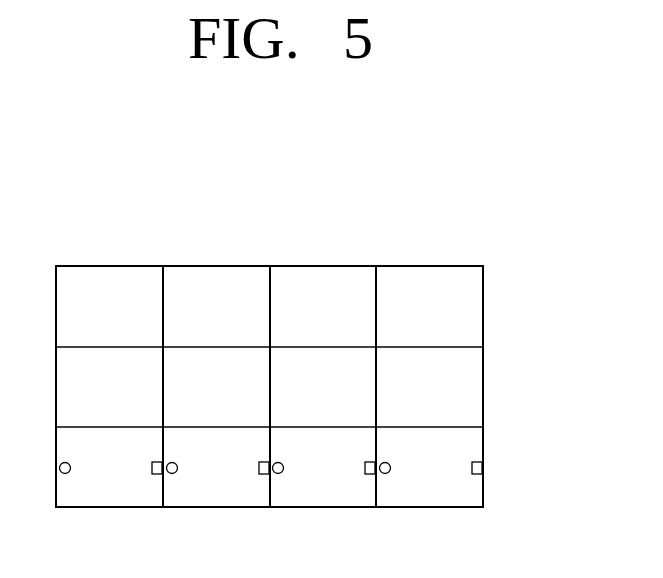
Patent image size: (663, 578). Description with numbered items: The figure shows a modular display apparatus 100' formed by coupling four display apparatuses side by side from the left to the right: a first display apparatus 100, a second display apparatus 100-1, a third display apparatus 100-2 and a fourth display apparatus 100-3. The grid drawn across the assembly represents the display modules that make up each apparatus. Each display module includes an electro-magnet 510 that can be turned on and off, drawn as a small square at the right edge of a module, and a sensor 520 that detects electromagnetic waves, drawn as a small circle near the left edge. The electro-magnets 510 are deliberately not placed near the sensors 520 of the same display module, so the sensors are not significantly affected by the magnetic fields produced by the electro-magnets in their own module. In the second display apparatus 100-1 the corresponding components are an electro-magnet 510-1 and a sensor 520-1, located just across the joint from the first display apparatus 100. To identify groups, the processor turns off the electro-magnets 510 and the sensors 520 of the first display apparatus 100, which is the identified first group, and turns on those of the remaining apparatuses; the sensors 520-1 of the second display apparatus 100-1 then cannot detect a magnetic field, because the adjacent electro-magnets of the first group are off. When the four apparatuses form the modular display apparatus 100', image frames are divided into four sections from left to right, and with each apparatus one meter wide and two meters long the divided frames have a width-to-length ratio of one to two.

The first display apparatus 100 is at (109, 356).
The second display apparatus 100-1 is at (208, 266).
The third display apparatus 100-2 is at (312, 266).
The fourth display apparatus 100-3 is at (417, 266).
The modular display apparatus 100' is at (306, 343).
The electro-magnet 510 is at (156, 475).
The electro-magnet 510-1 is at (263, 475).
The sensor 520 is at (65, 474).
The sensor 520-1 is at (173, 474).